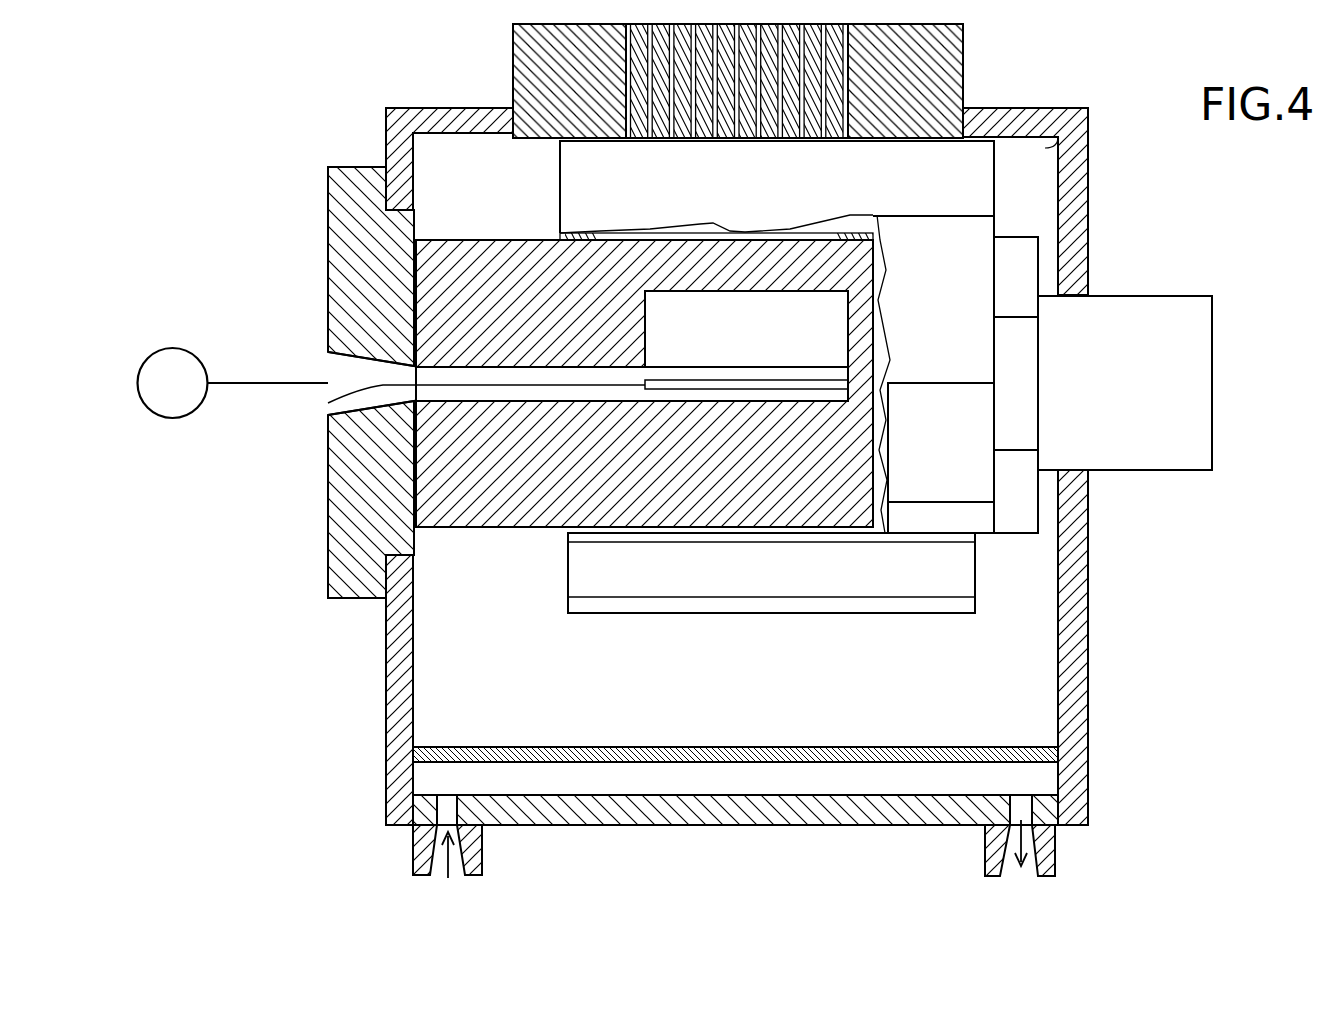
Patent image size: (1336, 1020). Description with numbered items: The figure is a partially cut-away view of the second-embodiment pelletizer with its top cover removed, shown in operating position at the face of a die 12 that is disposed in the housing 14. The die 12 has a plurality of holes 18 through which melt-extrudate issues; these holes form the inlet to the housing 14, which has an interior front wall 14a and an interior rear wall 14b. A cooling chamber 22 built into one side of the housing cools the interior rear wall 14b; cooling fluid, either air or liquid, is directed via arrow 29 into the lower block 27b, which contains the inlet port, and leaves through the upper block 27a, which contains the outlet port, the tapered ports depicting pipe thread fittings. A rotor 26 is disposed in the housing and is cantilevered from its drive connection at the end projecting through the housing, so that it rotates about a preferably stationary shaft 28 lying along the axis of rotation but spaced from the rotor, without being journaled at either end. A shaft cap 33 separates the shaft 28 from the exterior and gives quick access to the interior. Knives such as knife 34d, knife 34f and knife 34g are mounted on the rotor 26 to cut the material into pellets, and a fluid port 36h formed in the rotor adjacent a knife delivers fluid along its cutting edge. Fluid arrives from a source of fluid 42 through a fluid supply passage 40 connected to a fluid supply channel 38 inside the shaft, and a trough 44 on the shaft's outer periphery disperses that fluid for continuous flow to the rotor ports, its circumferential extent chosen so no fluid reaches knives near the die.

The die 12 is at (963, 80).
The housing 14 is at (385, 693).
The interior front wall 14a is at (1088, 140).
The interior rear wall 14b is at (1027, 745).
The holes 18 is at (847, 68).
The cooling chamber 22 is at (723, 783).
The rotor 26 is at (1038, 268).
The block 27a is at (1032, 876).
The block 27b is at (483, 878).
The shaft 28 is at (477, 240).
The arrow 29 is at (445, 863).
The shaft cap 33 is at (328, 552).
The knife 34d is at (977, 562).
The knife 34f is at (995, 492).
The knife 34g is at (995, 177).
The fluid port 36h is at (680, 318).
The fluid supply channel 38 is at (333, 400).
The fluid supply passage 40 is at (329, 367).
The source of fluid 42 is at (172, 348).
The trough 44 is at (477, 132).